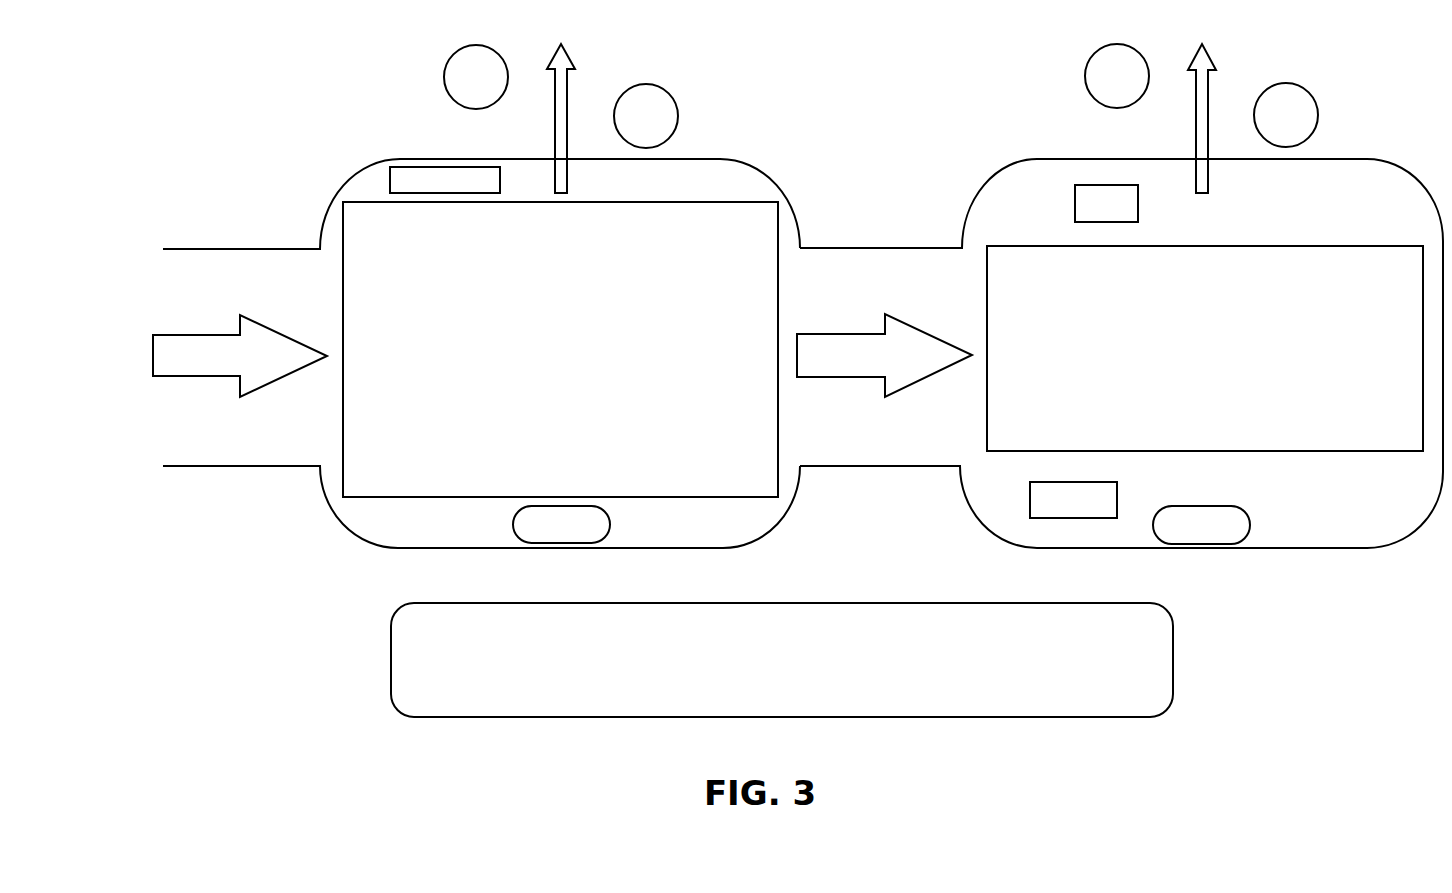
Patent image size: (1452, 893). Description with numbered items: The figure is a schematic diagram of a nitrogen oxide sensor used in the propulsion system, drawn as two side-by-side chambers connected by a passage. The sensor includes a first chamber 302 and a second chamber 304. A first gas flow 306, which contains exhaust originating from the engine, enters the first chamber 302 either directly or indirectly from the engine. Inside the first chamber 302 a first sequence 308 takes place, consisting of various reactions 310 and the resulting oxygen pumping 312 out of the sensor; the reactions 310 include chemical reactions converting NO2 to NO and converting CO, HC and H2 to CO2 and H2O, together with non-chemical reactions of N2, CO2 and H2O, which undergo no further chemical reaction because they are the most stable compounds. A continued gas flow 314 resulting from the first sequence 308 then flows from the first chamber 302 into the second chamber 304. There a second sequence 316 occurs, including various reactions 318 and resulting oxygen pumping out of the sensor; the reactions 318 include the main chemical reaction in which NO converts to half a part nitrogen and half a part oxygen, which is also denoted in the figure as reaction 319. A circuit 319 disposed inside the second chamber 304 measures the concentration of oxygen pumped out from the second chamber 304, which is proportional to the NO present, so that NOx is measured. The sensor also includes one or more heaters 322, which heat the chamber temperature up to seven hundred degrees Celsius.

The first chamber 302 is at (362, 540).
The second chamber 304 is at (1315, 548).
The first gas flow 306 is at (197, 335).
The first sequence 308 is at (560, 543).
The reactions 310 is at (688, 202).
The oxygen pumping 312 is at (567, 83).
The continued gas flow 314 is at (842, 334).
The second sequence 316 is at (1198, 544).
The reactions 318 is at (1333, 246).
The circuit 319 is at (1090, 185).
The heaters 322 is at (420, 167).